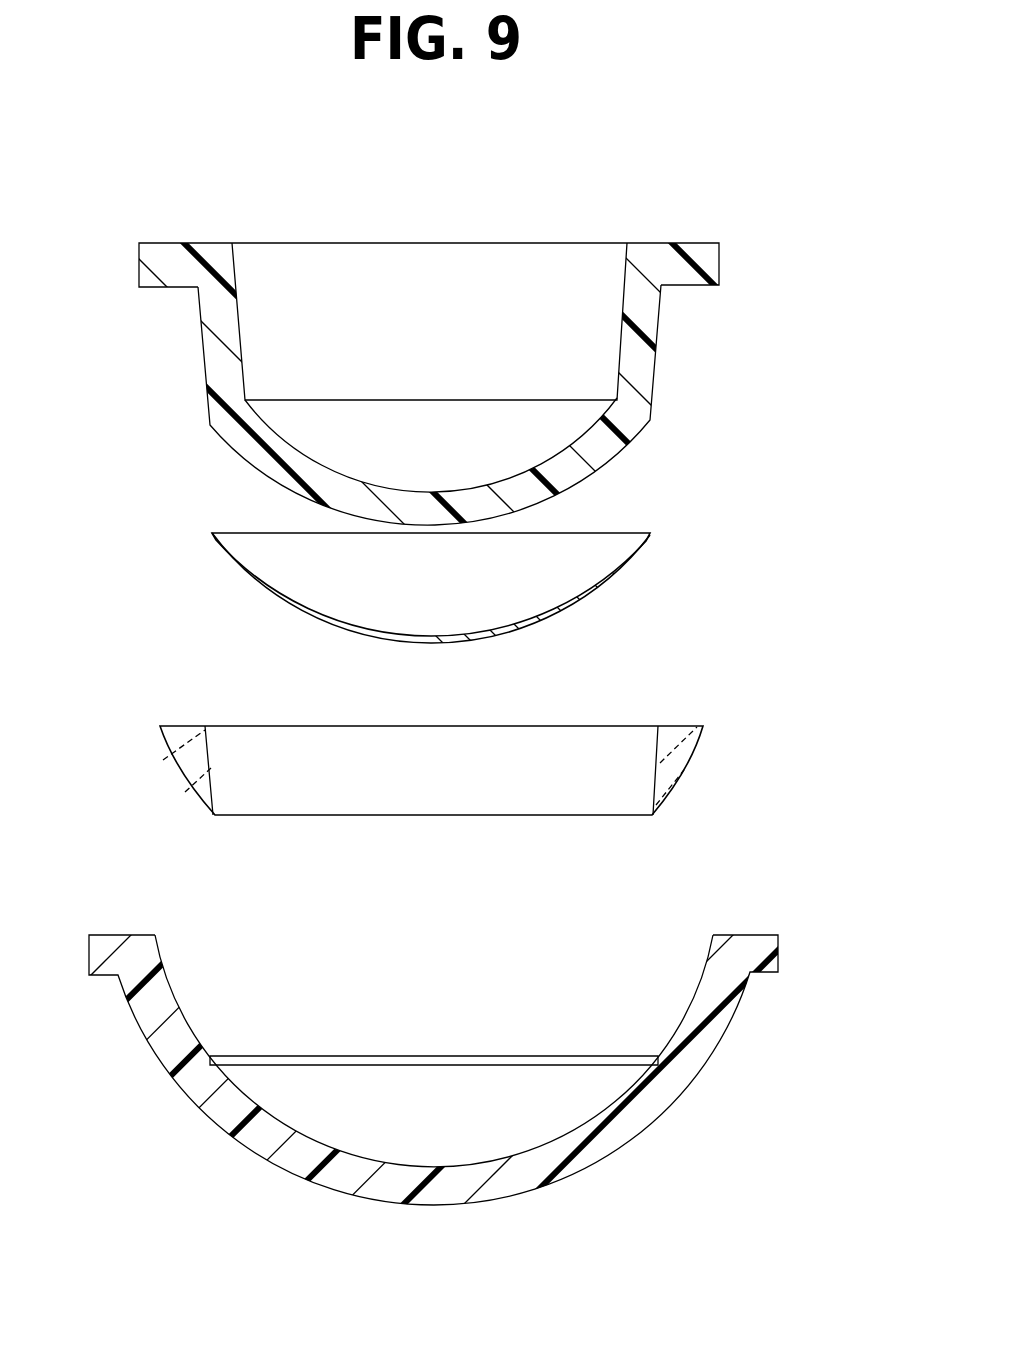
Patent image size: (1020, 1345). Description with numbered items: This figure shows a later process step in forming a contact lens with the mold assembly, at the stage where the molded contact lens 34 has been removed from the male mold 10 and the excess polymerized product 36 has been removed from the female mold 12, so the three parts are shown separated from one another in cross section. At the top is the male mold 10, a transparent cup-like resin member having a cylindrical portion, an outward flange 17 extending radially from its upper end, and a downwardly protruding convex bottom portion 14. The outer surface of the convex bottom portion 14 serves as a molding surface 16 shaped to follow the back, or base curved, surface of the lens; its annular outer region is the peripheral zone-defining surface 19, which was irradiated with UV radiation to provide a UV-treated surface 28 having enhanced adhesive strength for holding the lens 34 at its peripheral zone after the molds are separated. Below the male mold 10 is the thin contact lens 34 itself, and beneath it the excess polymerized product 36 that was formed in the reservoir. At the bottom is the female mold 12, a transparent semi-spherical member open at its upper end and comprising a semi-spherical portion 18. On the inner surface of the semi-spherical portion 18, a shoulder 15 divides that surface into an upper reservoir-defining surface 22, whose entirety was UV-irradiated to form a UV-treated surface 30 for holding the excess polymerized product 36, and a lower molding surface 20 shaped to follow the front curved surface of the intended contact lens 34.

The male mold 10 is at (651, 199).
The female mold 12 is at (771, 912).
The convex bottom portion 14 is at (262, 458).
The shoulder 15 is at (461, 1058).
The molding surface 16 is at (537, 502).
The outward flange 17 is at (703, 253).
The semi-spherical portion 18 is at (260, 1140).
The peripheral zone-defining surface 19 is at (622, 455).
The molding surface 20 is at (569, 1126).
The reservoir-defining surface 22 is at (672, 1010).
The UV-treated surface 28 is at (604, 405).
The UV-treated surface 30 is at (631, 1070).
The contact lens 34 is at (523, 636).
The excess polymerized product 36 is at (680, 722).